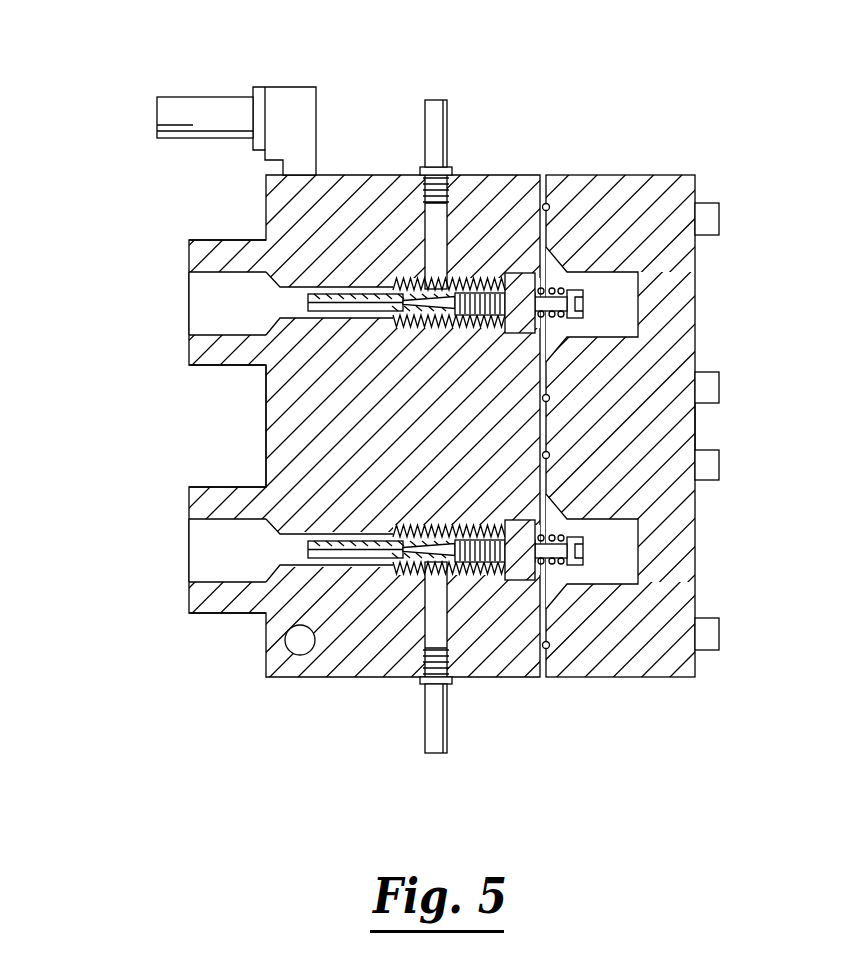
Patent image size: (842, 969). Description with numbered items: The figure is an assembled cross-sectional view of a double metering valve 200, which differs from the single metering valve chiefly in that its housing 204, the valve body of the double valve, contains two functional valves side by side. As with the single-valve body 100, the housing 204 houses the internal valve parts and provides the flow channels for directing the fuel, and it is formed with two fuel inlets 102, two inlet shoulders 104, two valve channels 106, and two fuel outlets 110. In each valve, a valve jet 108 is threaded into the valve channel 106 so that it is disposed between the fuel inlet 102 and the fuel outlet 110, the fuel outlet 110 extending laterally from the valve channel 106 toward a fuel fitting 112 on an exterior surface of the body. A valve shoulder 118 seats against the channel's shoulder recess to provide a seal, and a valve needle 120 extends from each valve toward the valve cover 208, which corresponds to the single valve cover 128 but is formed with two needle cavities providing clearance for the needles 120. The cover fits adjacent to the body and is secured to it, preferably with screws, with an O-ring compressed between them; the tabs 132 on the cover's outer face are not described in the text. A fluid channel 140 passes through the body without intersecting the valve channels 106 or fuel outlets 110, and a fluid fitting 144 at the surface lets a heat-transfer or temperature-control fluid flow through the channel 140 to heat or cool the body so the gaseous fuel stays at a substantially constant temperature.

The valve body 100 is at (343, 660).
The fuel inlet 102 is at (222, 273).
The inlet shoulder 104 is at (280, 316).
The valve channel 106 is at (291, 293).
The valve jet 108 is at (338, 303).
The fuel outlet 110 is at (440, 640).
The fuel fitting 112 is at (448, 132).
The valve shoulder 118 is at (505, 290).
The valve needle 120 is at (470, 326).
The valve cover 128 is at (607, 672).
The mounting tabs 132 is at (708, 235).
The fluid channel 140 is at (297, 660).
The fluid fitting 144 is at (315, 87).
The double metering valve 200 is at (693, 111).
The housing 204 is at (266, 435).
The valve cover 208 is at (697, 425).